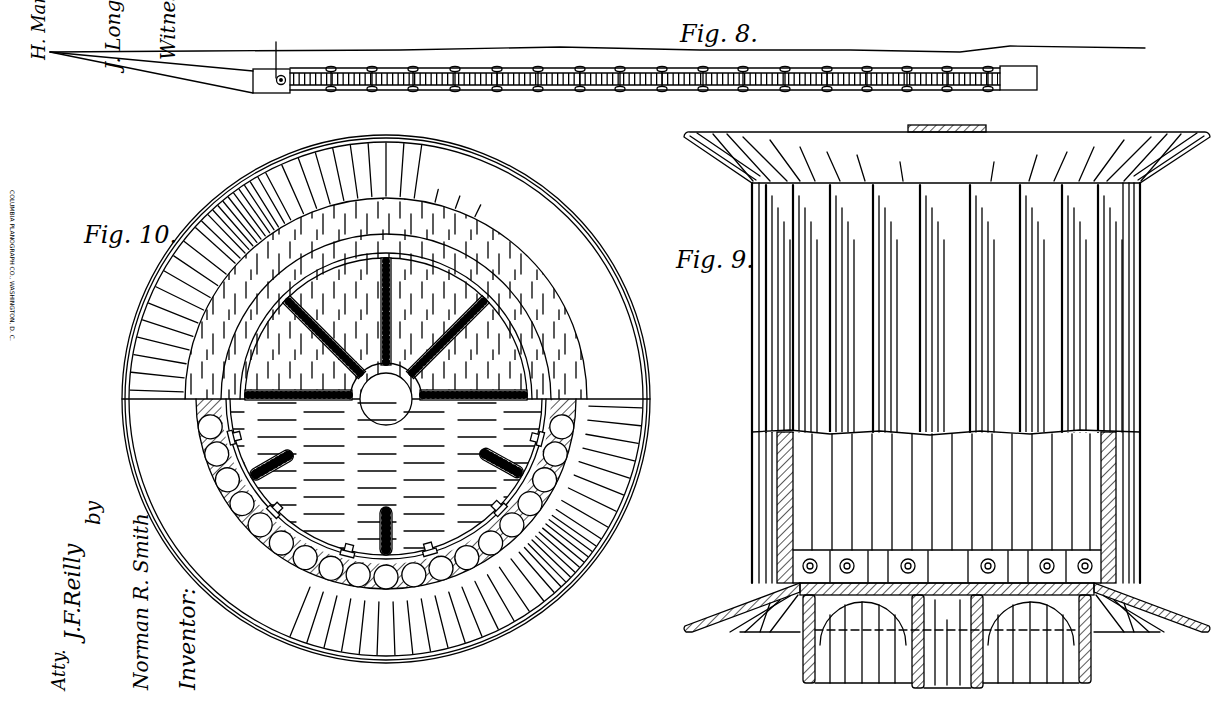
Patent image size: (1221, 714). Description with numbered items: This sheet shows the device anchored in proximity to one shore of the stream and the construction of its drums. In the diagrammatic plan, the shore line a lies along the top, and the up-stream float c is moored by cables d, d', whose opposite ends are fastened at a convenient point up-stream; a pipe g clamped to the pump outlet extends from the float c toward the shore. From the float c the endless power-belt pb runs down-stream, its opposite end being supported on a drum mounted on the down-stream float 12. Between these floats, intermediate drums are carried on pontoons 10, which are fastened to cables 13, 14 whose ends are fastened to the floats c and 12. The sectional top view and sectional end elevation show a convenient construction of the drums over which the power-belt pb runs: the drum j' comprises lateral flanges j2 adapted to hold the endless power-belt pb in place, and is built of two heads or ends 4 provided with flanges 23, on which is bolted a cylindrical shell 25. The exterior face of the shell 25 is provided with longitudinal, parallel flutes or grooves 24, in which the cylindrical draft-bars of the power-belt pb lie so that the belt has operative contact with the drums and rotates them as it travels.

In FIG. 8, the shore line a is at (380, 50).
In FIG. 8, the cable d is at (151, 60).
In FIG. 8, the cable d' is at (151, 76).
In FIG. 8, the pipe g is at (272, 63).
In FIG. 8, the float c is at (268, 94).
In FIG. 8, the cable 14 is at (516, 72).
In FIG. 8, the cable 13 is at (522, 86).
In FIG. 8, the power-belt pb is at (638, 80).
In FIG. 8, the pontoons 10 is at (786, 68).
In FIG. 8, the float 12 is at (1037, 78).
In FIG. 10, the drum j' is at (386, 399).
In FIG. 9, the drum j' is at (960, 383).
In FIG. 10, the lateral flanges j2 is at (126, 450).
In FIG. 9, the lateral flanges j2 is at (712, 150).
In FIG. 10, the heads or ends 4 is at (386, 479).
In FIG. 9, the heads or ends 4 is at (957, 641).
In FIG. 10, the flanges 23 is at (300, 537).
In FIG. 9, the flanges 23 is at (978, 552).
In FIG. 10, the longitudinal grooves 24 is at (262, 535).
In FIG. 9, the longitudinal grooves 24 is at (755, 476).
In FIG. 9, the cylindrical shell 25 is at (1112, 482).